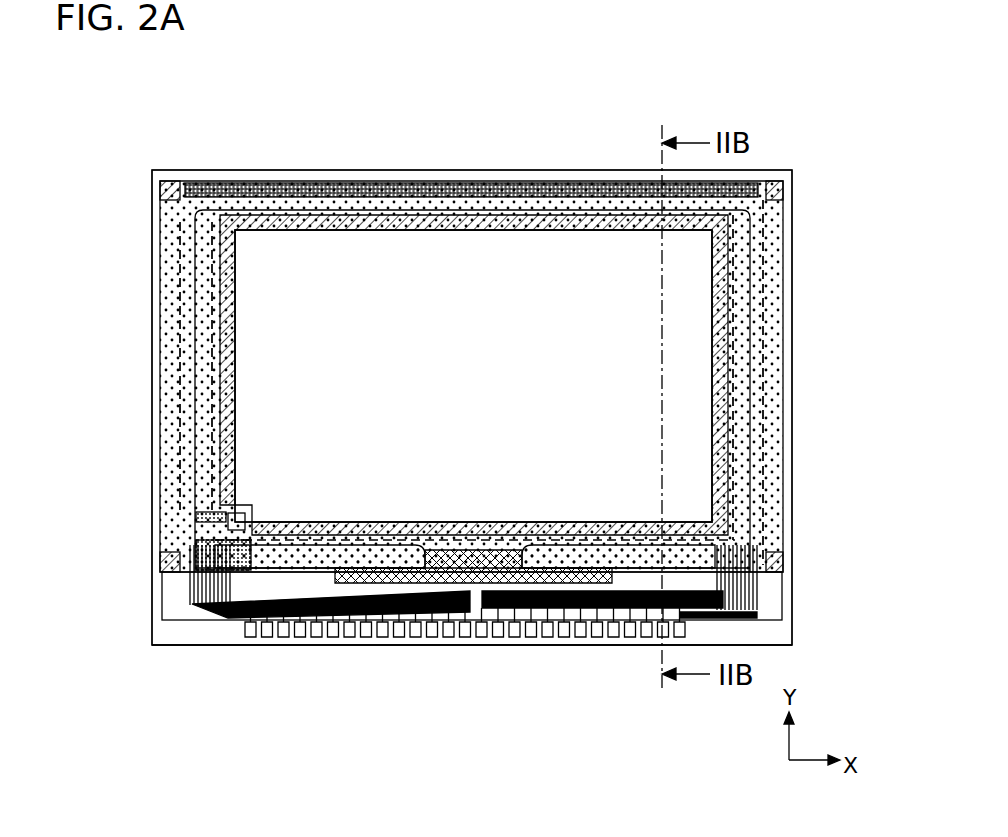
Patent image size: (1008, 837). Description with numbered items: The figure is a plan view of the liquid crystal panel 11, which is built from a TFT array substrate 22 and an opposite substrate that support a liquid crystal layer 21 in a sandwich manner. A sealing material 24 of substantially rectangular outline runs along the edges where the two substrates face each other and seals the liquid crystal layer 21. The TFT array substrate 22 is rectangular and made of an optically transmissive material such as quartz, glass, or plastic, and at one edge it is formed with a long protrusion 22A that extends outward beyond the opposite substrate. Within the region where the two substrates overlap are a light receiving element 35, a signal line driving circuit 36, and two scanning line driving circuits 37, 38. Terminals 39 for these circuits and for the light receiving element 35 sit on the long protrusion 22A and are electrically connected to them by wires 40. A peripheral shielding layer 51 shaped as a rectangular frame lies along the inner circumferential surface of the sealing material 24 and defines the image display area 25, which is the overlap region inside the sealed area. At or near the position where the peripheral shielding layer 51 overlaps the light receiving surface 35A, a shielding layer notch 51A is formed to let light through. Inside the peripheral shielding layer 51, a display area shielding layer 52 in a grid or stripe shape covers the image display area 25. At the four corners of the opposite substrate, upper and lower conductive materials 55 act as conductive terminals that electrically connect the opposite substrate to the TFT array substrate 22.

The liquid crystal panel 11 is at (770, 158).
The liquid crystal layer 21 is at (478, 255).
The TFT array substrate 22 is at (793, 605).
The long protrusion 22A is at (785, 636).
The sealing material 24 is at (770, 277).
The image display area 25 is at (470, 368).
The light receiving element 35 is at (222, 518).
The light receiving surface 35A is at (228, 532).
The signal line driving circuit 36 is at (470, 555).
The scanning line driving circuit 37 is at (203, 332).
The scanning line driving circuit 38 is at (735, 338).
The terminals 39 is at (390, 637).
The wires 40 is at (592, 183).
The peripheral shielding layer 51 is at (298, 222).
The shielding layer notch 51A is at (243, 510).
The display area shielding layer 52 is at (388, 248).
The upper and lower conductive materials 55 is at (165, 185).